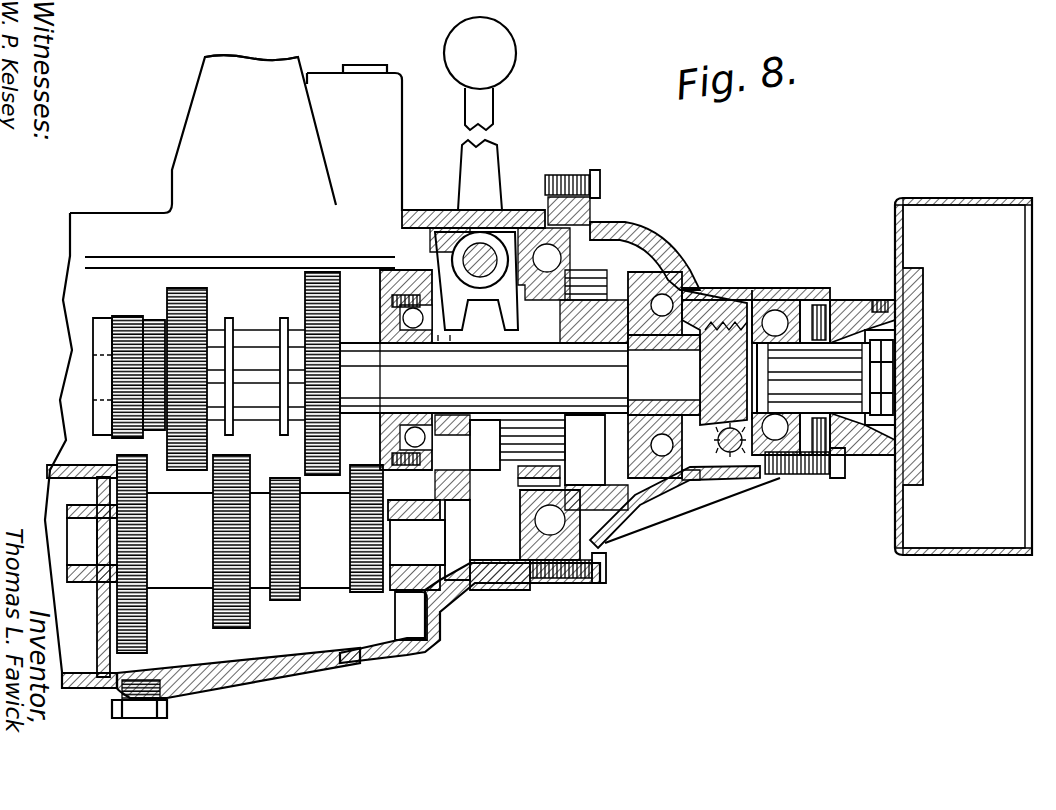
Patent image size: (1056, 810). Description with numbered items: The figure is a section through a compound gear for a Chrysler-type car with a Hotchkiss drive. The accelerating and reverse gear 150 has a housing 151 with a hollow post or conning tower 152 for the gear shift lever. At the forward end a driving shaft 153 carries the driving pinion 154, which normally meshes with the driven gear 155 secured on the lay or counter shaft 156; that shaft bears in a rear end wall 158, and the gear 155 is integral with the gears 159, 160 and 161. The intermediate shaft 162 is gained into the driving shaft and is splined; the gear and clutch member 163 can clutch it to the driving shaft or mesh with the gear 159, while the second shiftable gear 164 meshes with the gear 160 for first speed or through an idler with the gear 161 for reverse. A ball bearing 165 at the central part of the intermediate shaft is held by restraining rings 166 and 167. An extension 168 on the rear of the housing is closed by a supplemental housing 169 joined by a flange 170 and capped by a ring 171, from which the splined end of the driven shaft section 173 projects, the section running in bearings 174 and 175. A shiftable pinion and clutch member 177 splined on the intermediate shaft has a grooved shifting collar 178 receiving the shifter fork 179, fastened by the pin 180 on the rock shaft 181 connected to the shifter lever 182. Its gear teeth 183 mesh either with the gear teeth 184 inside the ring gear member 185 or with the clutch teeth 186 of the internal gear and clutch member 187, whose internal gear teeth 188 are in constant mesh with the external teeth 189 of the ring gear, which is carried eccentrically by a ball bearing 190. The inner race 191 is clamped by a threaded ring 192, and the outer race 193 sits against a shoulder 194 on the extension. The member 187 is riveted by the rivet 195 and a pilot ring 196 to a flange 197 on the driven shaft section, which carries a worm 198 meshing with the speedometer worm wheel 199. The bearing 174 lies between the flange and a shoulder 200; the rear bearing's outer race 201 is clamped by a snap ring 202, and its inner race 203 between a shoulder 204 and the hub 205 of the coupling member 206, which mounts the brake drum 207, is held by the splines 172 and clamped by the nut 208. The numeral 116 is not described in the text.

The clutch gear teeth 116 is at (718, 345).
The accelerating and reverse gear 150 is at (146, 208).
The housing 151 is at (350, 212).
The hollow post or conning tower 152 is at (200, 92).
The driving shaft 153 is at (102, 320).
The driving pinion 154 is at (136, 318).
The driven gear 155 is at (147, 640).
The lay or counter shaft 156 is at (392, 582).
The rear end wall 158 is at (480, 480).
The gear 159 is at (228, 630).
The gear 160 is at (283, 602).
The gear 161 is at (355, 590).
The intermediate shaft 162 is at (250, 348).
The gear and clutch member 163 is at (198, 302).
The second shiftable gear 164 is at (306, 296).
The ball bearing 165 is at (393, 302).
The restraining ring 166 is at (393, 458).
The restraining ring 167 is at (433, 452).
The extension 168 is at (565, 360).
The supplemental housing 169 is at (720, 290).
The flange 170 is at (580, 172).
The cap or ring 171 is at (820, 305).
The splines 172 is at (878, 400).
The driven shaft section 173 is at (722, 310).
The bearing 174 is at (700, 300).
The bearing 175 is at (808, 300).
The shiftable pinion and clutch member 177 is at (528, 433).
The grooved shifting collar 178 is at (455, 412).
The shifter fork 179 is at (470, 328).
The pin 180 is at (440, 240).
The rock shaft 181 is at (480, 245).
The shifter lever 182 is at (465, 110).
The gear teeth 183 is at (555, 446).
The gear teeth 184 is at (518, 469).
The ring gear member 185 is at (518, 483).
The clutch teeth 186 is at (618, 440).
The internal gear and clutch member 187 is at (96, 626).
The internal gear teeth 188 is at (590, 268).
The teeth 189 is at (620, 290).
The ball bearing 190 is at (530, 522).
The inner race 191 is at (565, 498).
The ring 192 is at (515, 490).
The outer race 193 is at (555, 580).
The shoulder 194 is at (520, 548).
The rivet 195 is at (660, 478).
The pilot ring 196 is at (662, 500).
The flange 197 is at (642, 413).
The worm 198 is at (760, 470).
The worm wheel 199 is at (730, 455).
The shoulder 200 is at (662, 292).
The outer race 201 is at (772, 318).
The snap ring 202 is at (755, 300).
The inner race 203 is at (805, 478).
The shoulder 204 is at (660, 395).
The hub 205 is at (842, 318).
The coupling member 206 is at (877, 438).
The brake drum 207 is at (897, 230).
The nut 208 is at (895, 370).